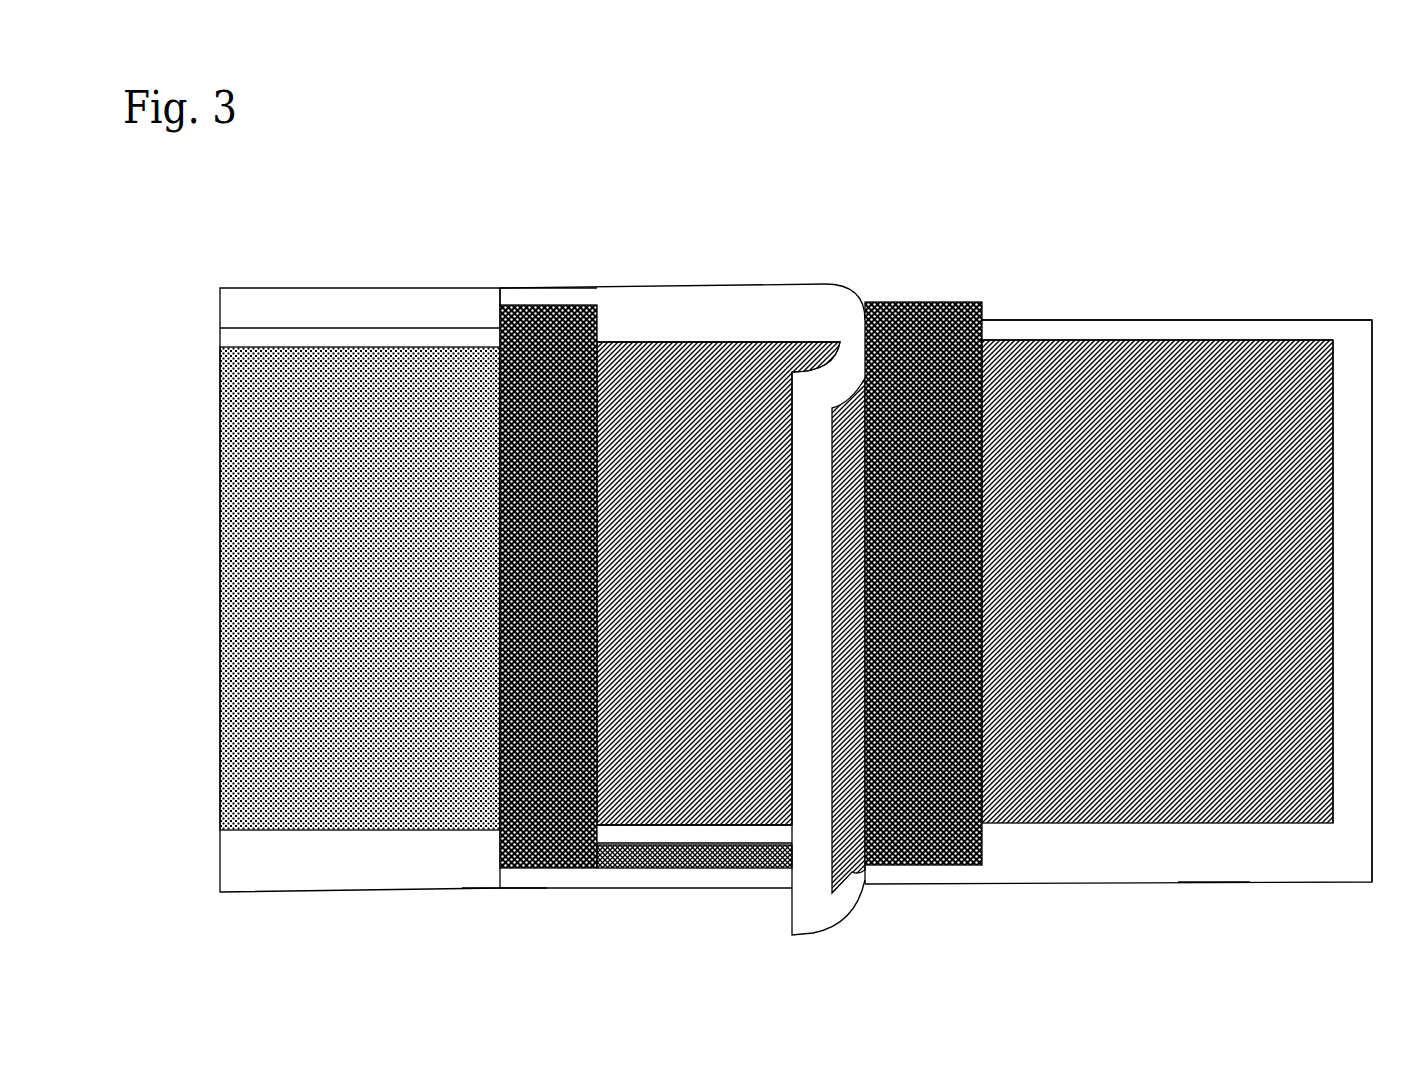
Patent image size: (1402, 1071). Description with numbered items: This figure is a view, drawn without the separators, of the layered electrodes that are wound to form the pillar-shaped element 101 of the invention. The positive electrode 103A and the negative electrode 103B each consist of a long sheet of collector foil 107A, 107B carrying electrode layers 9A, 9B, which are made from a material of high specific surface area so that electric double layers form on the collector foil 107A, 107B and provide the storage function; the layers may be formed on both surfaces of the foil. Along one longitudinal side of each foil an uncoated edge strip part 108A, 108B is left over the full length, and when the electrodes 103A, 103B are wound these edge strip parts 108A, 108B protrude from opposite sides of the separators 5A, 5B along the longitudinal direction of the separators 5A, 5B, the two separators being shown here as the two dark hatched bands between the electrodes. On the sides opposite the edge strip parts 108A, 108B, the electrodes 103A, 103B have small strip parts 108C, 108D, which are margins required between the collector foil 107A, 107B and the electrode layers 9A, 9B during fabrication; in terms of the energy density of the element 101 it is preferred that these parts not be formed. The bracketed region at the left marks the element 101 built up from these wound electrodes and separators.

The element 101 is at (498, 282).
The edge strip part 108A is at (613, 305).
The separator 5A is at (597, 323).
The electrode 103A is at (767, 284).
The collector foil 107A is at (813, 893).
The electrode layer 9A is at (853, 888).
The separator 5B is at (893, 302).
The strip part 108C is at (610, 838).
The edge strip part 108B is at (547, 877).
The electrode layer 9B is at (1088, 803).
The strip part 108D is at (1183, 332).
The electrode 103B is at (1353, 318).
The collector foil 107B is at (1353, 820).